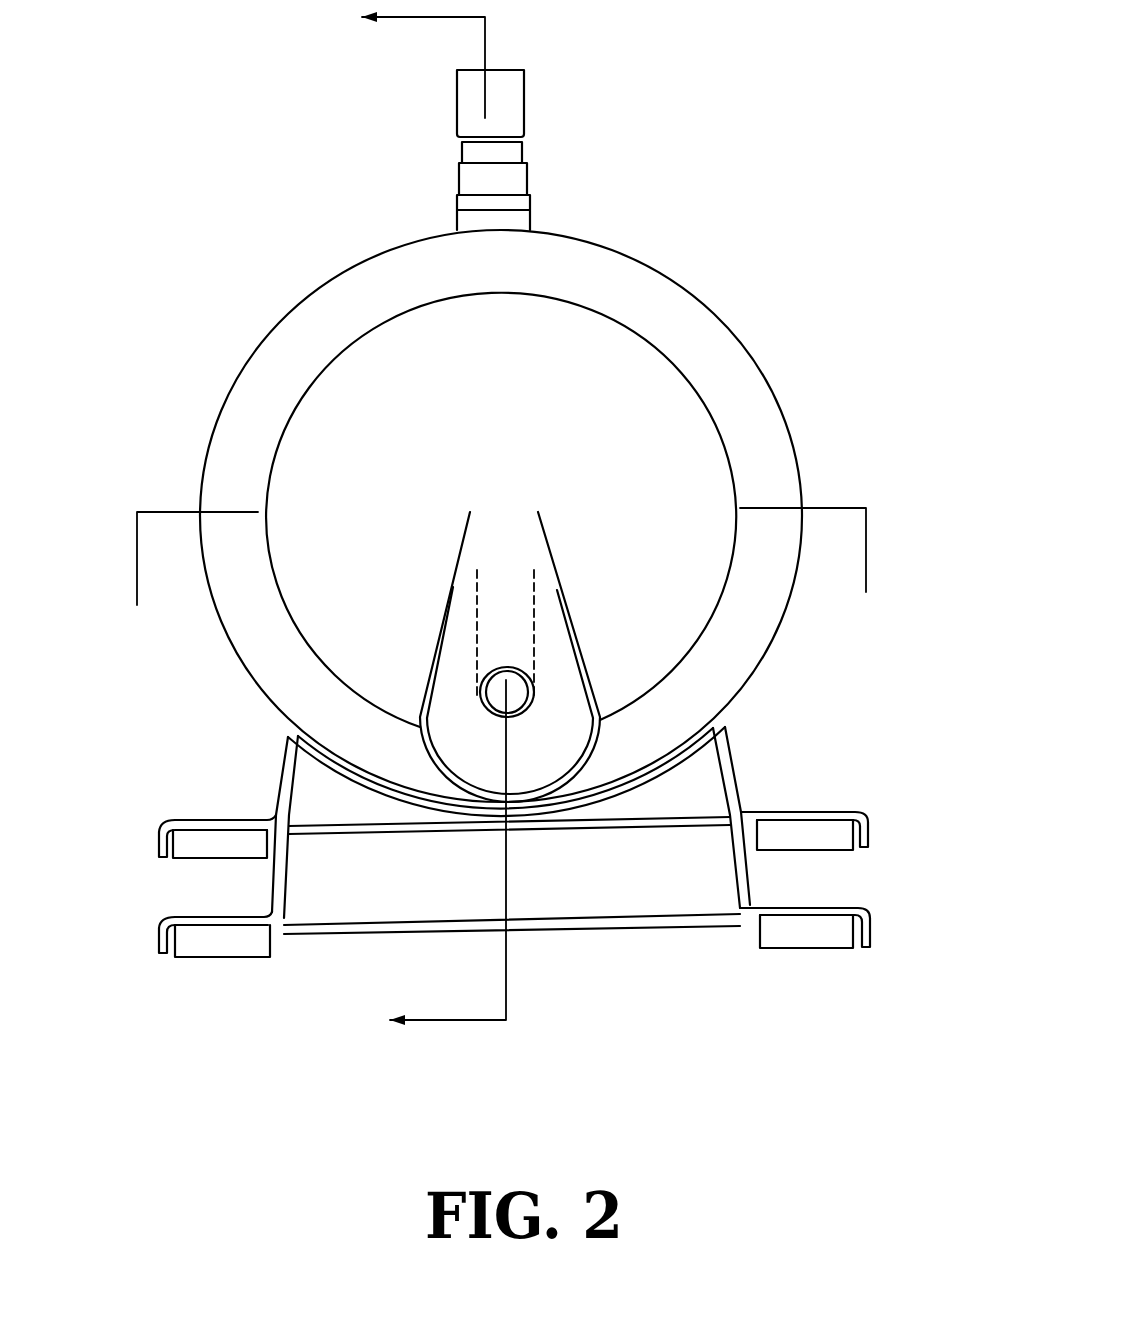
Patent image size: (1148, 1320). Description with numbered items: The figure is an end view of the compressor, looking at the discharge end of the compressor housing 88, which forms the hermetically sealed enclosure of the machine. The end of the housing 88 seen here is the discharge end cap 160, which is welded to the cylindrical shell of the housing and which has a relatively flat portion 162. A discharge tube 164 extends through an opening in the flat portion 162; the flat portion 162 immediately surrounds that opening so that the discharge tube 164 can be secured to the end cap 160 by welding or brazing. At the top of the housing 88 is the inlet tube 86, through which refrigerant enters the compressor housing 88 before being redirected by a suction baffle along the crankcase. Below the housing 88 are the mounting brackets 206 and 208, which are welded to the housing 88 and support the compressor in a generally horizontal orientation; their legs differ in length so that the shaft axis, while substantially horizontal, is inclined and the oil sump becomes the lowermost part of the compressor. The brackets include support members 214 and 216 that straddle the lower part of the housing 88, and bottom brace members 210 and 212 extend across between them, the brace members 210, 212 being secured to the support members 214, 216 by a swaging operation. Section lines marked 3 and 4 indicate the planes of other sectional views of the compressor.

The inlet tube 86 is at (523, 100).
The compressor housing 88 is at (727, 328).
The discharge end cap 160 is at (362, 363).
The flat portion 162 is at (483, 624).
The discharge tube 164 is at (507, 667).
The mounting bracket 206 is at (822, 948).
The mounting bracket 208 is at (825, 810).
The bottom brace member 210 is at (333, 934).
The bottom brace member 212 is at (450, 835).
The support member 214 is at (280, 882).
The support member 216 is at (278, 767).
The section line 3- 3 is at (505, 591).
The section line 4- 4 is at (409, 525).